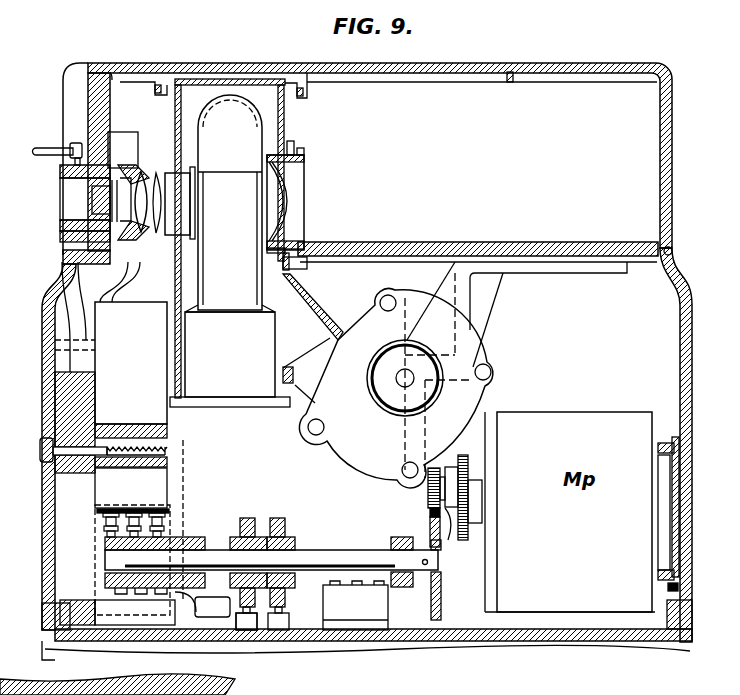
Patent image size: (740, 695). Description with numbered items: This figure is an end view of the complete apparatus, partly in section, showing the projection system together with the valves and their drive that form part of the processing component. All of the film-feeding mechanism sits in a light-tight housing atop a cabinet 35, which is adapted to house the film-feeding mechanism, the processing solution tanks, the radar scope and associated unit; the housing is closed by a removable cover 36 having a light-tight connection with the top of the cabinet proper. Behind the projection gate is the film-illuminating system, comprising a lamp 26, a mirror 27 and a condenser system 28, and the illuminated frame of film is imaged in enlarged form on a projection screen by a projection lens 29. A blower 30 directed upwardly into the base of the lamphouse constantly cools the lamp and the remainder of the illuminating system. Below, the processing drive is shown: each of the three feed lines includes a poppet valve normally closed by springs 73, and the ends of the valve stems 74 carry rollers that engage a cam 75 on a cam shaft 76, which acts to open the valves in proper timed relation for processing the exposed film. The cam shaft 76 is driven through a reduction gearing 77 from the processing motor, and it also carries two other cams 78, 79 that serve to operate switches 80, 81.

The lamp 26 is at (230, 251).
The mirror 27 is at (292, 192).
The condenser system 28 is at (142, 180).
The projection lens 29 is at (100, 208).
The blower 30 is at (395, 380).
The cabinet 35 is at (684, 360).
The removable cover 36 is at (670, 172).
The springs 73 is at (103, 511).
The valve stems 74 is at (104, 523).
The cam 75 is at (108, 579).
The cam shaft 76 is at (315, 556).
The reduction gearing 77 is at (455, 537).
The cam 78 is at (285, 514).
The cam 79 is at (245, 519).
The switch 80 is at (289, 621).
The switch 81 is at (247, 630).